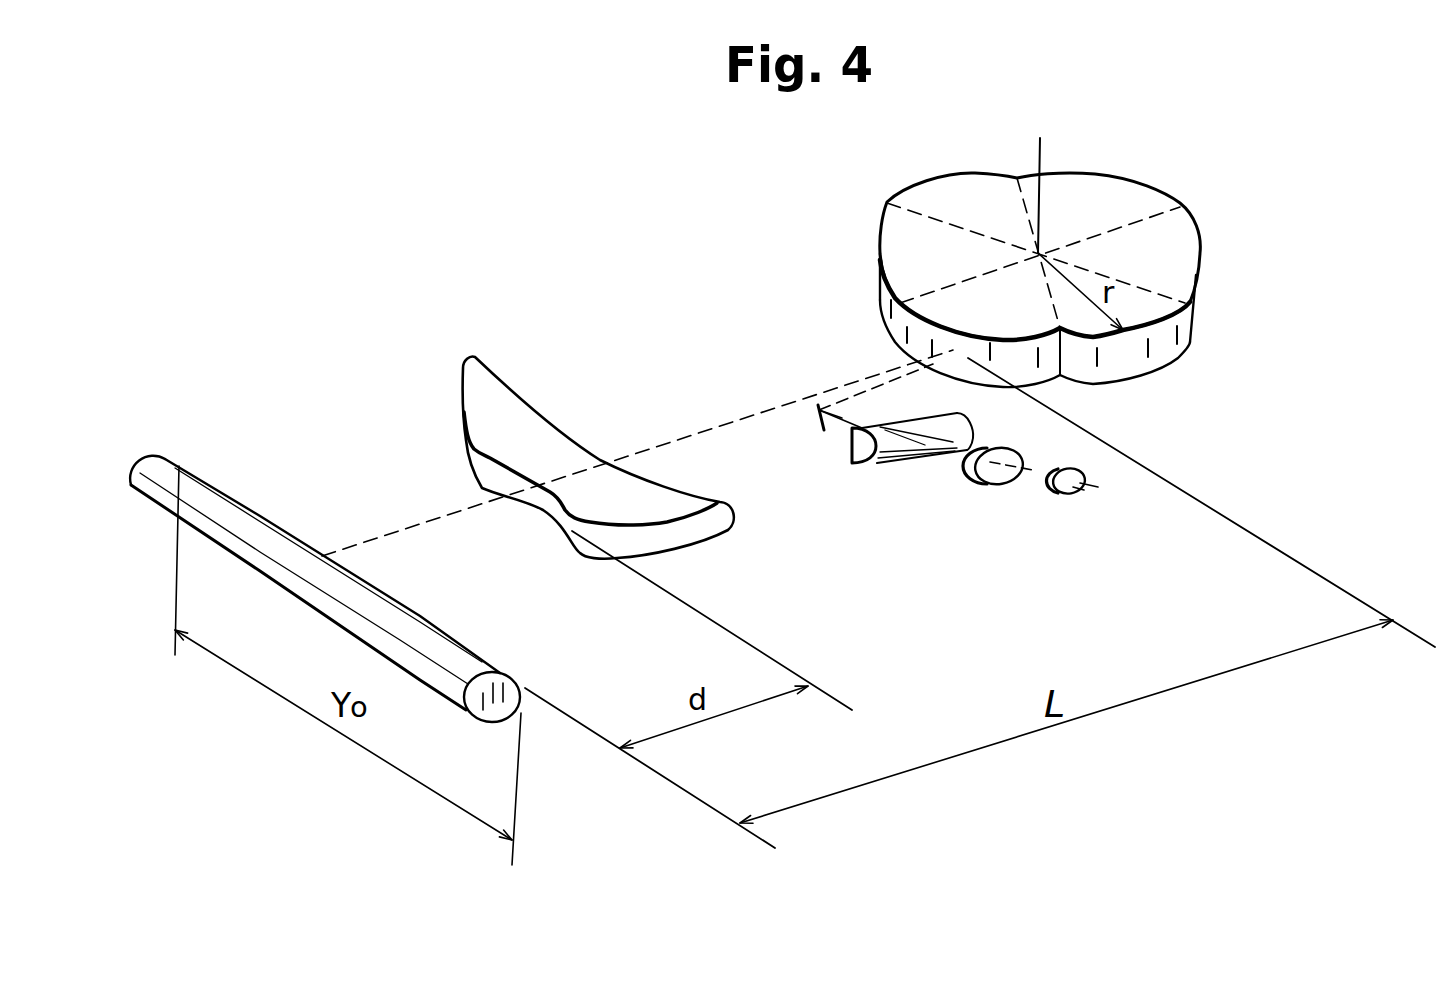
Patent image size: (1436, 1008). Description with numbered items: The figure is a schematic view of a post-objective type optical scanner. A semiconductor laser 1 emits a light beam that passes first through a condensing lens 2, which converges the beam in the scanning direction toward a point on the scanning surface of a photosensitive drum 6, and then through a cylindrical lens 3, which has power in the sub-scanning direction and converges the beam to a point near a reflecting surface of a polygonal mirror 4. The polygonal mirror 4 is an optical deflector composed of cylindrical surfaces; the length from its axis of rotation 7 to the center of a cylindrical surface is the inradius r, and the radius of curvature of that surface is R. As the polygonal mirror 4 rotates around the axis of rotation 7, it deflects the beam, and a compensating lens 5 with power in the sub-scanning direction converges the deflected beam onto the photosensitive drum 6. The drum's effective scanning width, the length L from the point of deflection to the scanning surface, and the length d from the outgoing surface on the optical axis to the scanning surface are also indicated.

The semiconductor laser 1 is at (1081, 494).
The condensing lens 2 is at (1003, 483).
The cylindrical lens 3 is at (962, 430).
The polygonal mirror 4 is at (908, 267).
The compensating lens 5 is at (482, 417).
The photosensitive drum 6 is at (463, 645).
The axis of rotation 7 is at (1040, 160).
The radius of curvature R is at (1162, 350).